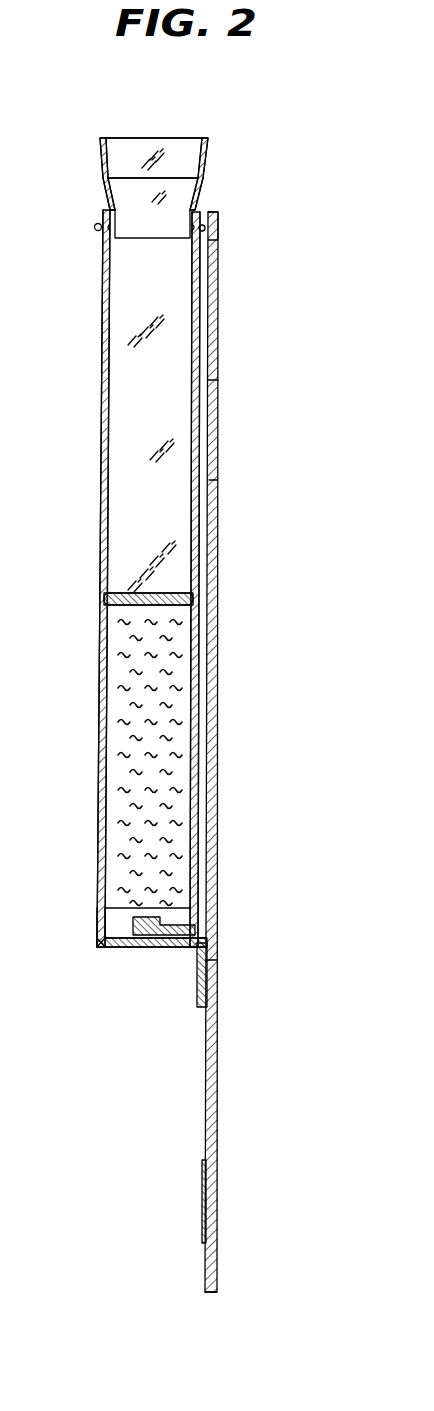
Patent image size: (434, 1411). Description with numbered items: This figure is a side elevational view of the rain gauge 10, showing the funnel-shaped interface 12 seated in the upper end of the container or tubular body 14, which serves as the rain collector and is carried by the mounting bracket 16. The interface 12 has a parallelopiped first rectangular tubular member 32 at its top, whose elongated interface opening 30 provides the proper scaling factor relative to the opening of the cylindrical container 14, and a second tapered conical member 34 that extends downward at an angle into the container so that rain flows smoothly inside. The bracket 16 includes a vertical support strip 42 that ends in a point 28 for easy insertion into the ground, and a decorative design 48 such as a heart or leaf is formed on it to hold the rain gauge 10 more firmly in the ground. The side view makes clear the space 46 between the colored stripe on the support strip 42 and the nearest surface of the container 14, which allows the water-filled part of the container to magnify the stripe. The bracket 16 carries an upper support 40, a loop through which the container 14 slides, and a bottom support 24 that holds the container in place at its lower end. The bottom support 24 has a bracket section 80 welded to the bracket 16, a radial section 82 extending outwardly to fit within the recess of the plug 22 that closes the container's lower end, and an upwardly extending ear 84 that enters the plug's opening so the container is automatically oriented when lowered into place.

The rain gauge 10 is at (38, 491).
The interface 12 is at (88, 157).
The container or tubular body 14 is at (100, 733).
The mounting bracket 16 is at (224, 387).
The plug 22 is at (120, 932).
The bottom support 24 is at (172, 947).
The point 28 is at (215, 1295).
The interface opening 30 is at (164, 138).
The first rectangular tubular member 32 is at (188, 162).
The second tapered conical member 34 is at (183, 190).
The upper support 40 is at (222, 220).
The vertical support strip 42 is at (222, 640).
The space 46 is at (199, 495).
The decorative design 48 is at (202, 1175).
The bracket section 80 is at (217, 968).
The radial section 82 is at (197, 952).
The upwardly extending ear 84 is at (137, 945).